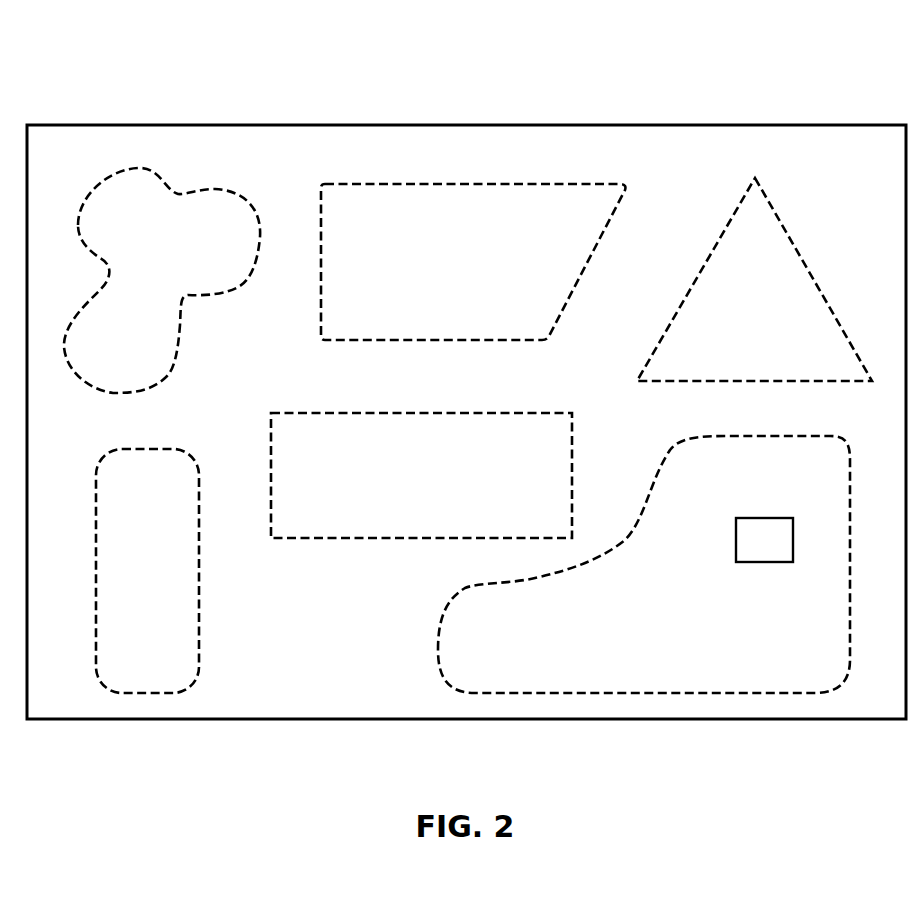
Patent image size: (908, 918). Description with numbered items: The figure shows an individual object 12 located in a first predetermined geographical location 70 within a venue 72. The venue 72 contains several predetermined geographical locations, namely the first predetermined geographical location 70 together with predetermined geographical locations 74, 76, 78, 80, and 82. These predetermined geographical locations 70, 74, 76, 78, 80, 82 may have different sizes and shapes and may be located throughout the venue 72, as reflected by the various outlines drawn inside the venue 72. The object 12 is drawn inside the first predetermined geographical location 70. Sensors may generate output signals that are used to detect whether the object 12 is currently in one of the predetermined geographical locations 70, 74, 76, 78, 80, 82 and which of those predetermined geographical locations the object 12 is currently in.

The venue 72 is at (746, 125).
The predetermined geographical location 80 is at (138, 268).
The predetermined geographical location 82 is at (397, 267).
The predetermined geographical location 74 is at (745, 330).
The predetermined geographical location 76 is at (399, 493).
The predetermined geographical location 78 is at (133, 566).
The first predetermined geographical location 70 is at (546, 658).
The individual object 12 is at (752, 552).